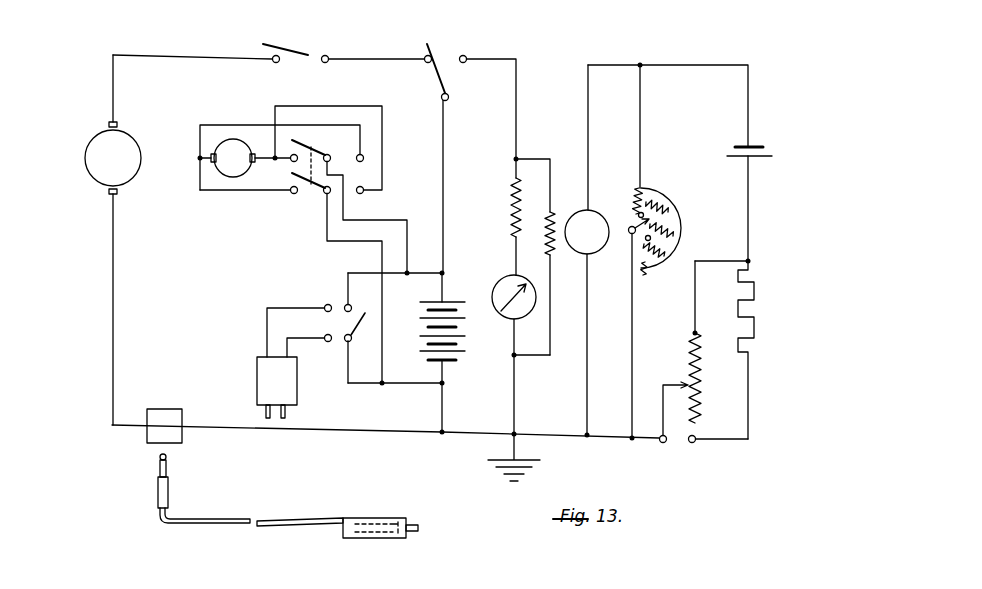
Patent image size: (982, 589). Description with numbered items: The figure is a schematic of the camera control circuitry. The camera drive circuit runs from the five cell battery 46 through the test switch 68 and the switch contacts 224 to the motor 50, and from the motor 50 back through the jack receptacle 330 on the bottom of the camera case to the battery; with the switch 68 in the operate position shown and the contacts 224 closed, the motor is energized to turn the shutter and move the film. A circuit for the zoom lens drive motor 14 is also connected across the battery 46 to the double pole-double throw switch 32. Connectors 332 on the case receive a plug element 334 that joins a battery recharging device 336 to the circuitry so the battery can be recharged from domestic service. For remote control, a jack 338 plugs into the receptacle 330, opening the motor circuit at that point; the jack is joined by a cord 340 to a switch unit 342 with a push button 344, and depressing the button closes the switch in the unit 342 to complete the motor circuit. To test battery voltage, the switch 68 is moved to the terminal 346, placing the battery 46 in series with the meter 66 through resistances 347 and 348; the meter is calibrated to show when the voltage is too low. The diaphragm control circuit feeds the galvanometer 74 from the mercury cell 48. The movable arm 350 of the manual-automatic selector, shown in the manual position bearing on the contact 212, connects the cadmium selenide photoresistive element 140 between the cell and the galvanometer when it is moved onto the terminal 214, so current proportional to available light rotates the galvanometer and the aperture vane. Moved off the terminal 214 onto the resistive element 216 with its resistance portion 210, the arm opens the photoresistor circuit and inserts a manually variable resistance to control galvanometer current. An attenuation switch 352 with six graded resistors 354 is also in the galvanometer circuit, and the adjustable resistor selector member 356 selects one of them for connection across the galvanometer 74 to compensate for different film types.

The zoom lens drive motor 14 is at (234, 142).
The double pole-double throw switch 32 is at (318, 155).
The five cell battery 46 is at (462, 287).
The mercury cell 48 is at (765, 150).
The motor 50 is at (98, 138).
The meter 66 is at (505, 313).
The test switch 68 is at (439, 65).
The galvanometer 74 is at (601, 212).
The cadmium selenide photoresistive element 140 is at (752, 303).
The resistance element 210 is at (700, 412).
The contact 212 is at (660, 446).
The terminal 214 is at (693, 444).
The rheostat 216 is at (695, 333).
The switch contacts 224 is at (309, 54).
The jack receptacle 330 is at (168, 418).
The connectors 332 is at (363, 312).
The plug element 334 is at (325, 305).
The battery recharging device 336 is at (257, 372).
The jack 338 is at (170, 490).
The cord 340 is at (263, 520).
The switch unit 342 is at (378, 503).
The push button 344 is at (418, 525).
The terminal 346 is at (467, 57).
The resistance 347 is at (511, 195).
The resistance 348 is at (558, 207).
The movable arm 350 is at (679, 368).
The attenuation switch 352 is at (665, 176).
The graded resistors 354 is at (677, 217).
The adjustable resistor selector member 356 is at (628, 240).